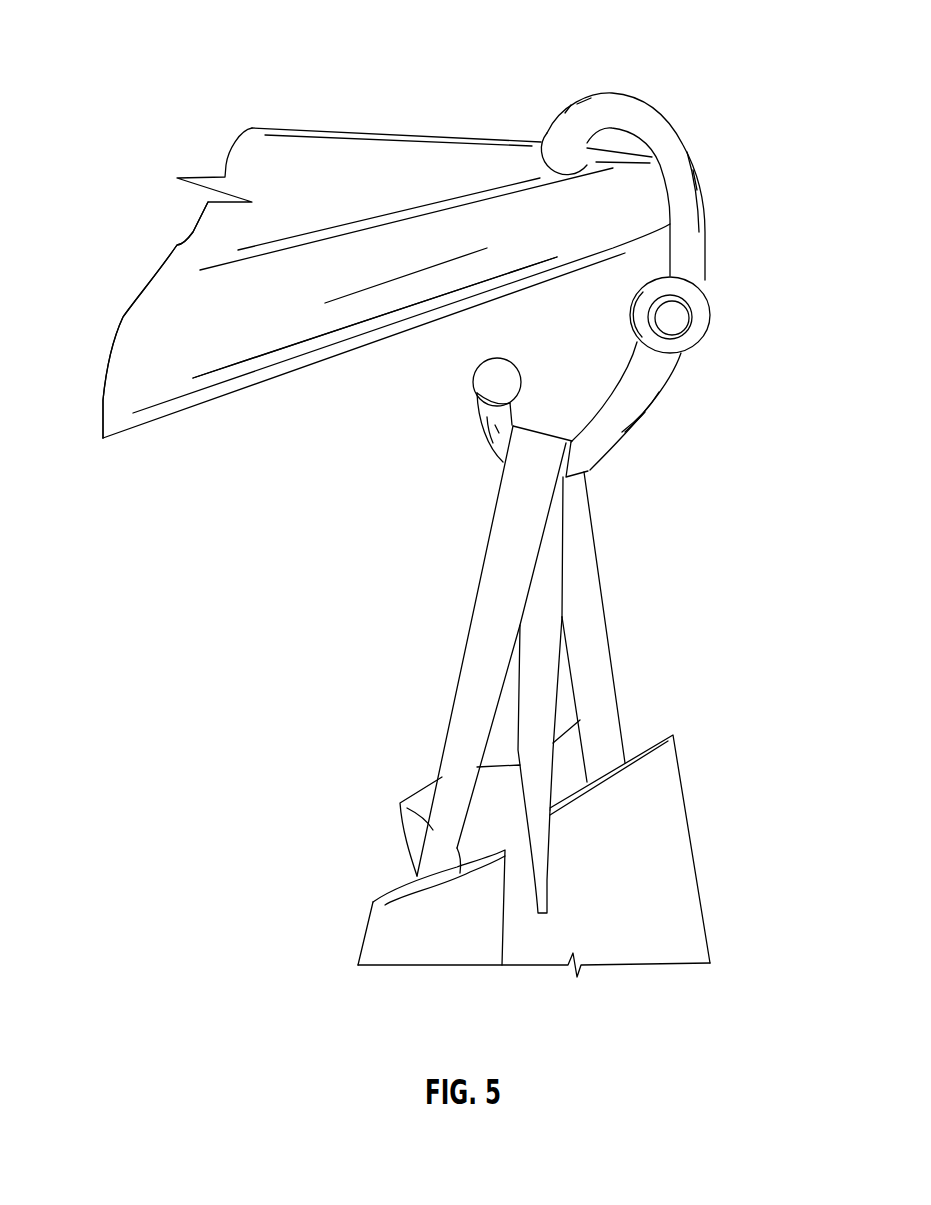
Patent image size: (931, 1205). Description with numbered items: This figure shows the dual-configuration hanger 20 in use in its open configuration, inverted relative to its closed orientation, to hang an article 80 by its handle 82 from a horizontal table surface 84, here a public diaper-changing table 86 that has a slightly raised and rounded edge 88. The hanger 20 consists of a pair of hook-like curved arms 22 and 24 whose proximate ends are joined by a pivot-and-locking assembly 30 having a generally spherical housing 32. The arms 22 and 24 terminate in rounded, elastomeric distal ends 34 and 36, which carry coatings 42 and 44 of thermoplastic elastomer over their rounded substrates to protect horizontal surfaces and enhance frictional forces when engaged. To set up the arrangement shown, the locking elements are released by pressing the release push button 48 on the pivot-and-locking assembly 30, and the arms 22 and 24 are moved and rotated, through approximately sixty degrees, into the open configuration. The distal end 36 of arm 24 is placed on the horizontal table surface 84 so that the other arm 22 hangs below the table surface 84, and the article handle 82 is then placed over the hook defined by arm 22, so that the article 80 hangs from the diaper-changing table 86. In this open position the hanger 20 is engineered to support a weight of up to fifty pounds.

The hanger 20 is at (601, 264).
The curved arm 22 is at (687, 163).
The curved arm 24 is at (635, 412).
The pivot-and-locking assembly 30 is at (719, 335).
The housing 32 is at (697, 333).
The distal end 34 is at (596, 151).
The distal end 36 is at (551, 410).
The coating 42 is at (540, 158).
The coating 44 is at (507, 385).
The release push button 48 is at (675, 310).
The article 80 is at (663, 827).
The handle 82 is at (463, 687).
The horizontal table surface 84 is at (345, 162).
The diaper-changing table 86 is at (160, 332).
The edge 88 is at (293, 298).